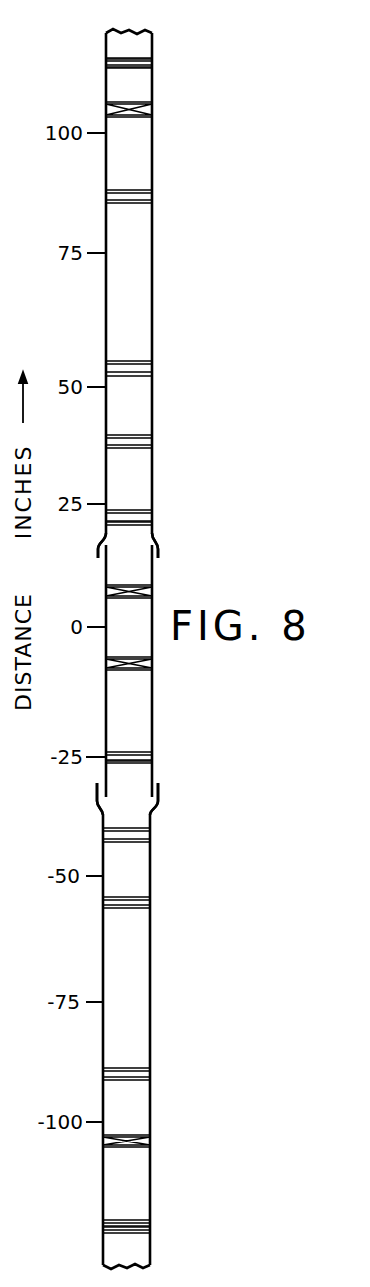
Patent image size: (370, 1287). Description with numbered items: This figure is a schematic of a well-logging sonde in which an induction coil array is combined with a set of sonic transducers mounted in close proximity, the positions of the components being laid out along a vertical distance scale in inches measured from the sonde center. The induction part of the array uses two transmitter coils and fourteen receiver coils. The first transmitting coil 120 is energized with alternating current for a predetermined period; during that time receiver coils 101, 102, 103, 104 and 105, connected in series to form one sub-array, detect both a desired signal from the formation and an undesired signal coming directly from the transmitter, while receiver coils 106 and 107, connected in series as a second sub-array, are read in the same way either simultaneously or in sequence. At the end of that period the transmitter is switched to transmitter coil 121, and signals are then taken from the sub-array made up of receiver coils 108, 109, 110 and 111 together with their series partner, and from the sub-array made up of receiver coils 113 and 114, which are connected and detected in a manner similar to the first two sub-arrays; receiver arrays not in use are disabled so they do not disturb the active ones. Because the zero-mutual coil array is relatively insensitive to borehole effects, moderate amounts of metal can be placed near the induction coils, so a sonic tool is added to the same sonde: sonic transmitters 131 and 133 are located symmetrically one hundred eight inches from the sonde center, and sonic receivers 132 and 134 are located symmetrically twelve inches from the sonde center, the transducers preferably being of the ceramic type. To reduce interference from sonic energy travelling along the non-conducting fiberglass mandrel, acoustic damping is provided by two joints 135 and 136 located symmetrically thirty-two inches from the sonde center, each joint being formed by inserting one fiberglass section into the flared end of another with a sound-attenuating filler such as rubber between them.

The receiver coil 101 is at (152, 1228).
The receiver coil 102 is at (154, 758).
The receiver coil 103 is at (154, 516).
The receiver coil 104 is at (154, 373).
The receiver coil 105 is at (175, 41).
The receiver coil 106 is at (154, 441).
The receiver coil 107 is at (160, 58).
The receiver coil 108 is at (160, 58).
The receiver coil 109 is at (165, 510).
The receiver coil 110 is at (167, 757).
The receiver coil 111 is at (150, 904).
The receiver coil 113 is at (152, 836).
The receiver coil 114 is at (165, 1227).
The first transmitting coil 120 is at (154, 192).
The transmitter coil 121 is at (150, 1075).
The sonic transmitter 131 is at (150, 1142).
The sonic receiver 132 is at (154, 660).
The sonic transmitter 133 is at (154, 104).
The sonic receiver 134 is at (154, 587).
The joint 135 is at (158, 794).
The joint 136 is at (158, 548).